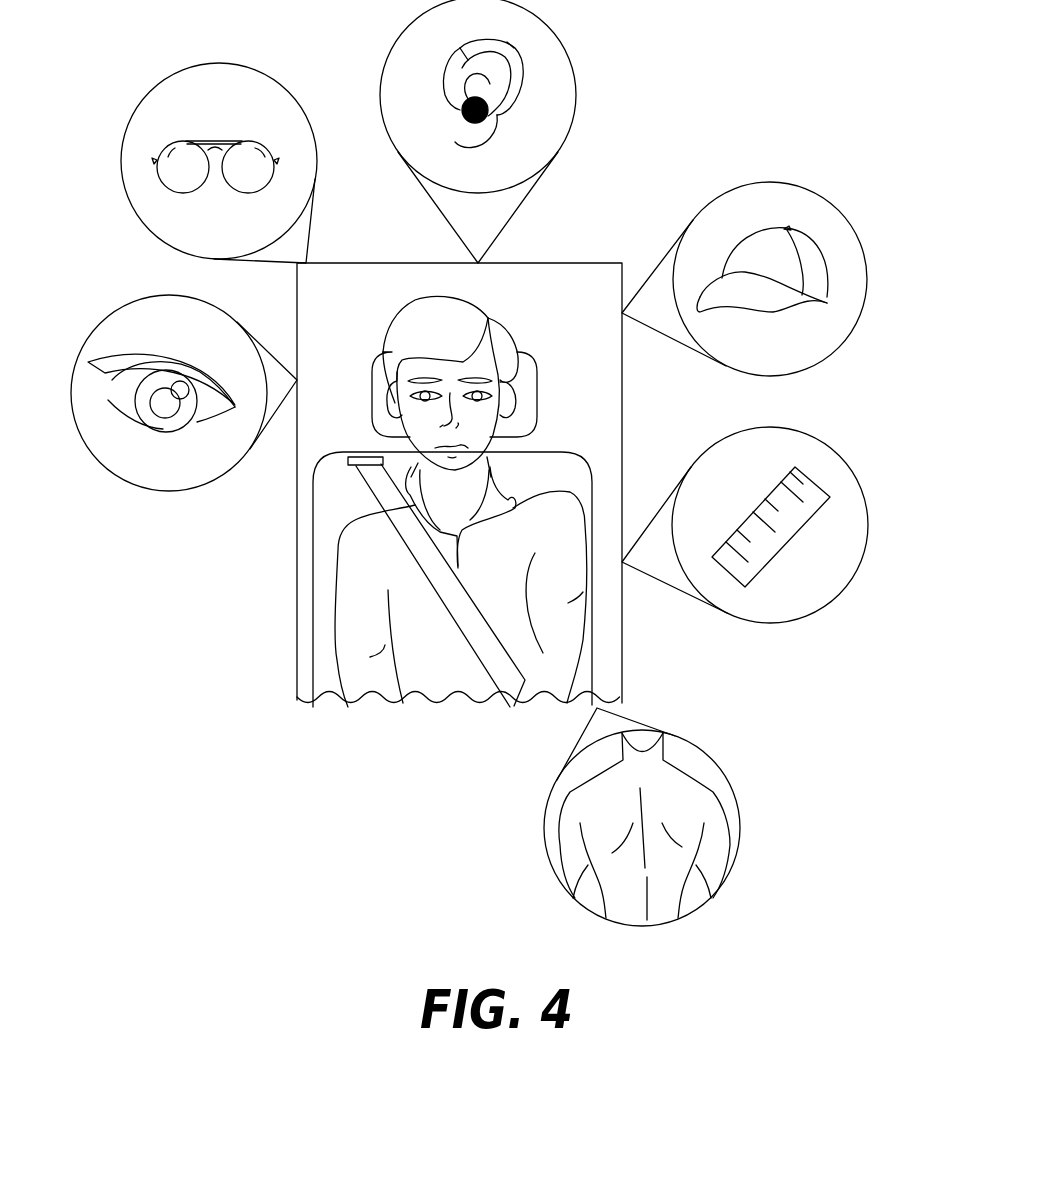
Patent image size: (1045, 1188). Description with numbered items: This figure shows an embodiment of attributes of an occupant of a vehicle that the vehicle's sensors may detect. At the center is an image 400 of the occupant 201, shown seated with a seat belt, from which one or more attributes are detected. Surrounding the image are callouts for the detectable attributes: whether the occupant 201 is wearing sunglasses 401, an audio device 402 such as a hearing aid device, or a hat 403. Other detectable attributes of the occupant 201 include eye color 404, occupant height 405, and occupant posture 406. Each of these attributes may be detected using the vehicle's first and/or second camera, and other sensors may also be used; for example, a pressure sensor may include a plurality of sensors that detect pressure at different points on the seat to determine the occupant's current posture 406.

The image 400 is at (337, 262).
The occupant 201 is at (540, 498).
The sunglasses 401 is at (122, 147).
The audio device 402 is at (570, 124).
The hat 403 is at (865, 248).
The eye color 404 is at (72, 398).
The occupant height 405 is at (867, 500).
The occupant posture 406 is at (733, 790).